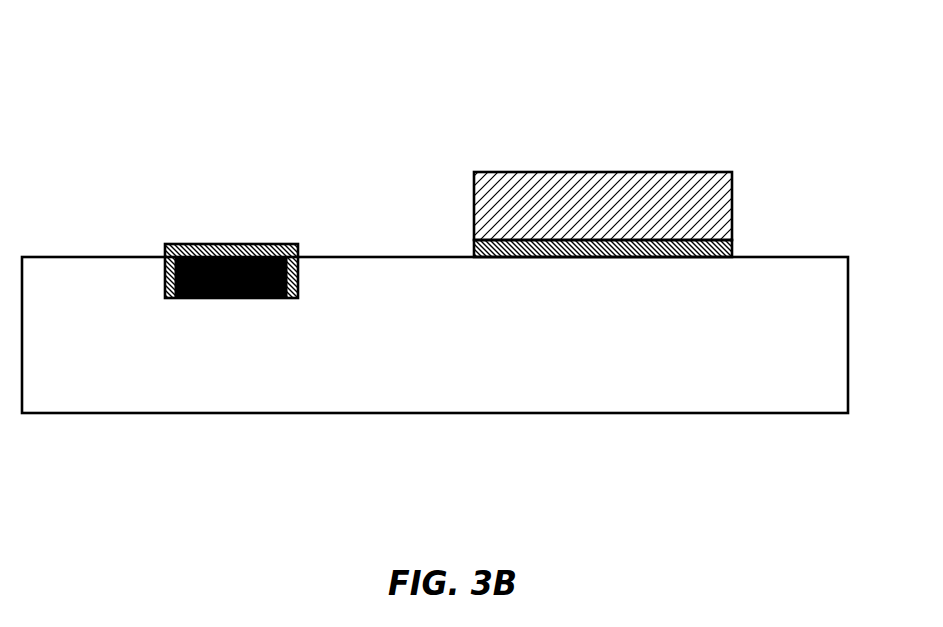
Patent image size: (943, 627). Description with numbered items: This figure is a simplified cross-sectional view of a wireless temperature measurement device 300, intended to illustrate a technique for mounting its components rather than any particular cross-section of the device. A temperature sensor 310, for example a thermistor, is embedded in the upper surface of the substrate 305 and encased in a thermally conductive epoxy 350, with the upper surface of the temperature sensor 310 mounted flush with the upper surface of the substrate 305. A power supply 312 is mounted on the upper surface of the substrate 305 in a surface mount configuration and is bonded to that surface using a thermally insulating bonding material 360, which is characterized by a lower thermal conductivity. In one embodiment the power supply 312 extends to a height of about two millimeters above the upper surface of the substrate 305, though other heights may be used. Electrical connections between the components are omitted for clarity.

The wireless temperature measurement device 300 is at (663, 92).
The substrate 305 is at (820, 402).
The temperature sensor 310 is at (212, 298).
The power supply 312 is at (732, 210).
The thermally conductive epoxy 350 is at (181, 244).
The thermally insulating bonding material 360 is at (685, 248).